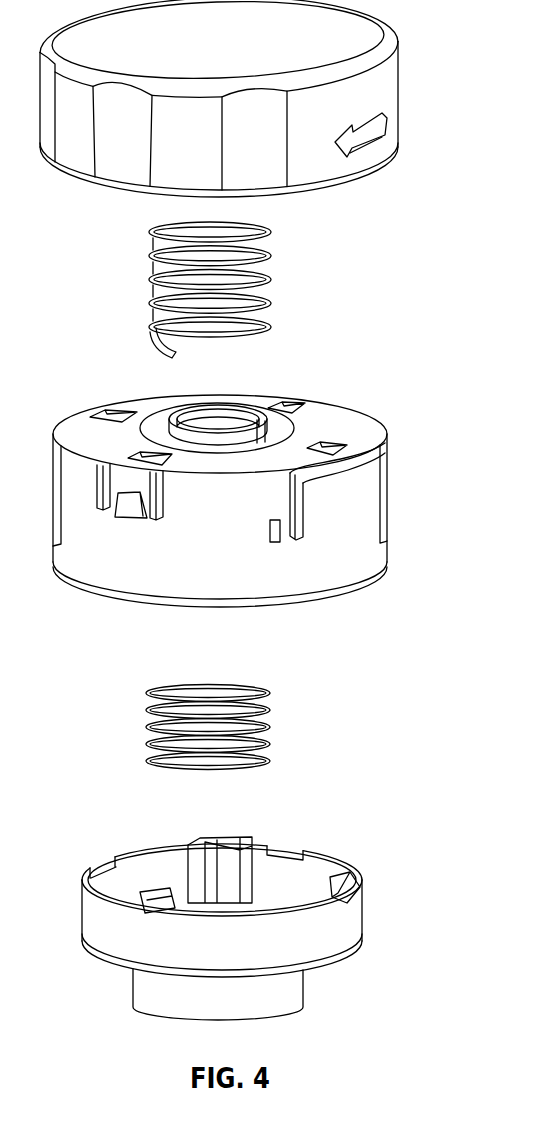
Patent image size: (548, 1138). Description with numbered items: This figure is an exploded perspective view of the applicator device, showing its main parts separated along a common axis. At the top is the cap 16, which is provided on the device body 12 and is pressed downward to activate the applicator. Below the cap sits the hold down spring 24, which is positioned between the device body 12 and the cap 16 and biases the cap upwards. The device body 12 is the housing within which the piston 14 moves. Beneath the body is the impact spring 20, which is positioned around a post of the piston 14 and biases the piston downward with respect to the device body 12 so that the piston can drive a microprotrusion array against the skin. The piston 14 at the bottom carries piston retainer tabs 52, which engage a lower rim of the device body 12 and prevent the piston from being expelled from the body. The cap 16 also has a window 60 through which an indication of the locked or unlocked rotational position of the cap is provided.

The device body 12 is at (353, 427).
The piston 14 is at (258, 926).
The cap 16 is at (368, 38).
The impact spring 20 is at (270, 725).
The hold down spring 24 is at (272, 282).
The piston retainer tabs 52 is at (357, 898).
The window 60 is at (380, 133).